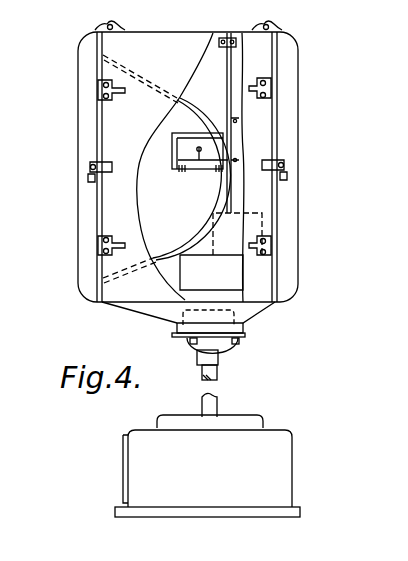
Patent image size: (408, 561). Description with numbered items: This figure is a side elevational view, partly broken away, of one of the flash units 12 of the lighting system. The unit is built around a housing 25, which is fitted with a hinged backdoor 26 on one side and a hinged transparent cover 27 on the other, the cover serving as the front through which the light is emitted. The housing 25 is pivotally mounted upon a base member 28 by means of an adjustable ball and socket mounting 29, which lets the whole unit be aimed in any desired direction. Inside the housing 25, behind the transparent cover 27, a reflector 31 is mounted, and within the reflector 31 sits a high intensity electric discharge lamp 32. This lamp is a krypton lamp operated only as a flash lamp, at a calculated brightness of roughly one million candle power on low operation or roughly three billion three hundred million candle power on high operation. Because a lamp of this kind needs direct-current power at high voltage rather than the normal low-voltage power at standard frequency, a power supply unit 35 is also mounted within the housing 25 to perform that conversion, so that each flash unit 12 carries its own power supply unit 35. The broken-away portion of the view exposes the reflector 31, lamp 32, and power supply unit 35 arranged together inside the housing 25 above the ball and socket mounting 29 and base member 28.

The flash unit 12 is at (341, 56).
The housing 25 is at (170, 36).
The hinged backdoor 26 is at (283, 78).
The hinged transparent cover 27 is at (83, 114).
The base member 28 is at (282, 456).
The adjustable ball and socket mounting 29 is at (222, 346).
The reflector 31 is at (219, 191).
The high intensity electric discharge lamp 32 is at (189, 171).
The power supply unit 35 is at (232, 272).